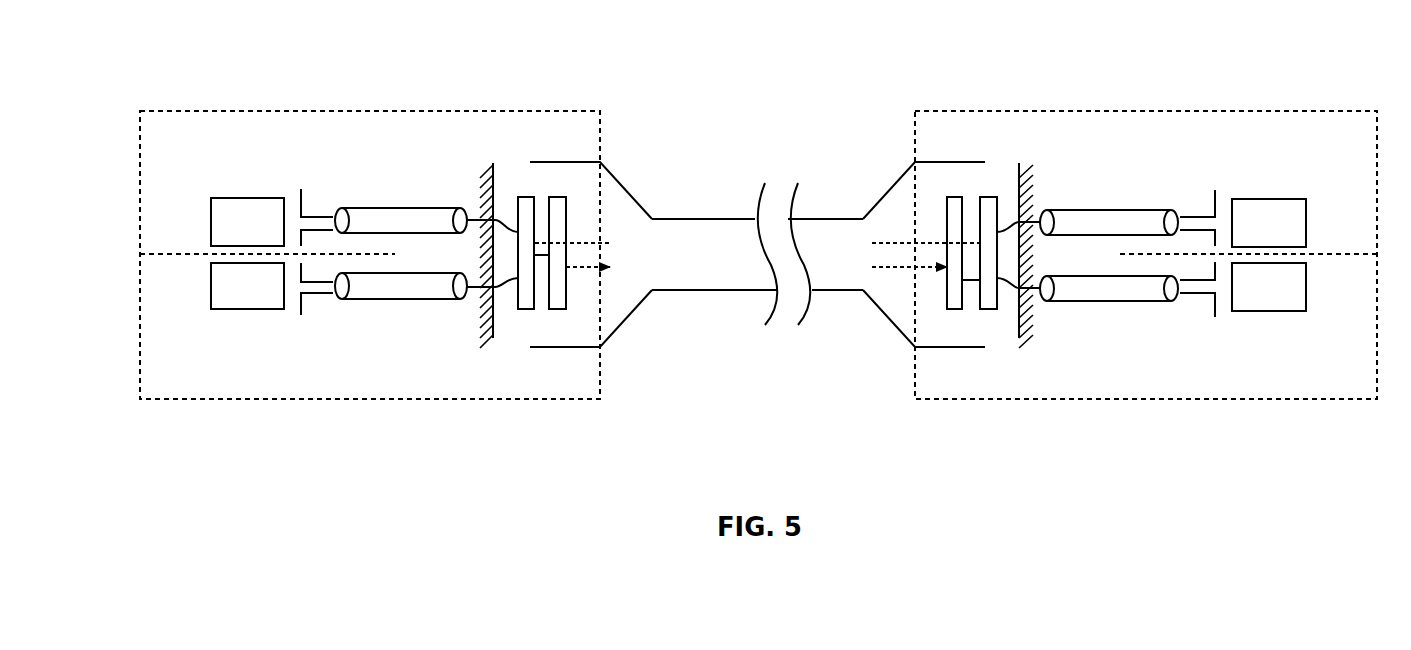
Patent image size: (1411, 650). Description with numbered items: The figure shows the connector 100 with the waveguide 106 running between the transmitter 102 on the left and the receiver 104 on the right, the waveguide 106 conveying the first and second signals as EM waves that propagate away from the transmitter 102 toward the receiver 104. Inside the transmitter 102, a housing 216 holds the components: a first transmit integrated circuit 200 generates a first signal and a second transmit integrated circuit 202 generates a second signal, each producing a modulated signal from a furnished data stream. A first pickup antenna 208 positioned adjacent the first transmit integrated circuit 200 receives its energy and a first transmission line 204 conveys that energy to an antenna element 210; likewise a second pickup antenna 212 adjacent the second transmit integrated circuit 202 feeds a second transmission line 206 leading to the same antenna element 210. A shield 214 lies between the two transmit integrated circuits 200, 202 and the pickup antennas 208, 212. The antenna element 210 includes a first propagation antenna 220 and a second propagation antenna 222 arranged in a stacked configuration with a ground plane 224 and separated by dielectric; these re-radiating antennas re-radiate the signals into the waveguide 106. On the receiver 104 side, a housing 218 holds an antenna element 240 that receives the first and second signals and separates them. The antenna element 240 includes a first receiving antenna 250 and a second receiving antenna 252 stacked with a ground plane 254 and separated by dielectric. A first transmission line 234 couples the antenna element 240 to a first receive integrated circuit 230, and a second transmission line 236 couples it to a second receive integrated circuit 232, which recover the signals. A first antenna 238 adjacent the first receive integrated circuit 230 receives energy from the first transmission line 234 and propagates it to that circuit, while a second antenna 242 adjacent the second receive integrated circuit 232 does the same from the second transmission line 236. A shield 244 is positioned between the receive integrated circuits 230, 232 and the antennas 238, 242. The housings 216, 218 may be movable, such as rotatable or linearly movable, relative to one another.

The connector 100 is at (700, 88).
The transmitter 102 is at (512, 111).
The receiver 104 is at (977, 111).
The waveguide 106 is at (715, 219).
The first transmit integrated circuit 200 is at (248, 198).
The second transmit integrated circuit 202 is at (248, 309).
The first transmission line 204 is at (398, 208).
The second transmission line 206 is at (398, 299).
The first pickup antenna 208 is at (312, 197).
The antenna element 210 is at (587, 200).
The second pickup antenna 212 is at (312, 307).
The shield 214 is at (170, 252).
The housing 216 is at (235, 111).
The housing 218 is at (1118, 111).
The first propagation antenna 220 is at (535, 300).
The second propagation antenna 222 is at (567, 306).
The ground plane 224 is at (493, 336).
The first receive integrated circuit 230 is at (1267, 199).
The second receive integrated circuit 232 is at (1267, 311).
The first transmission line 234 is at (1118, 210).
The second transmission line 236 is at (1108, 301).
The first antenna 238 is at (1203, 202).
The antenna element 240 is at (927, 200).
The second antenna 242 is at (1207, 303).
The shield 244 is at (1347, 254).
The first receiving antenna 250 is at (982, 306).
The second receiving antenna 252 is at (947, 302).
The ground plane 254 is at (1020, 337).